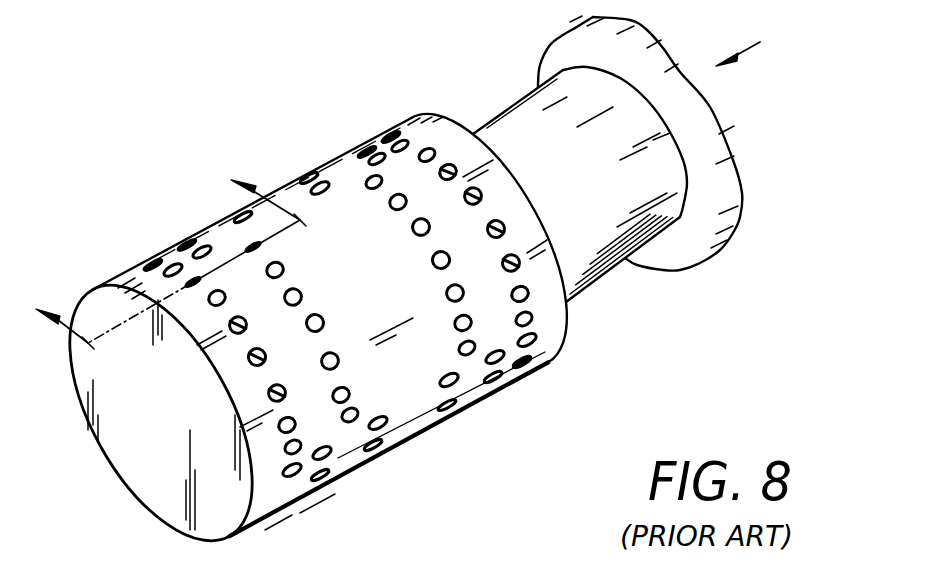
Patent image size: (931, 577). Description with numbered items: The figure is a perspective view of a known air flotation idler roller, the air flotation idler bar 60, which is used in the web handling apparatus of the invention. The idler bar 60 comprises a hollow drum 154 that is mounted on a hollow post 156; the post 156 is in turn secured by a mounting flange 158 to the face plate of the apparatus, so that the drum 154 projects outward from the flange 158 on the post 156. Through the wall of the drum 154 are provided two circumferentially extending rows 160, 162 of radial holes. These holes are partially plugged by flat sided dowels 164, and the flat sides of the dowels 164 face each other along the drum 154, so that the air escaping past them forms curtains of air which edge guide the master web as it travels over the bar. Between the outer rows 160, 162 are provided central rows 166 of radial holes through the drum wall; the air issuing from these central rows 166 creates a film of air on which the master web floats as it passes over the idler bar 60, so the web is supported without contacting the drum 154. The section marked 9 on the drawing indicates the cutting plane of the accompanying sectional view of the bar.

The air flotation idler bar 60 is at (419, 293).
The hollow drum 154 is at (408, 424).
The hollow post 156 is at (600, 253).
The mounting flange 158 is at (717, 134).
The circumferentially extending row of radial holes 160 is at (223, 377).
The circumferentially extending row of radial holes 162 is at (466, 200).
The flat sided dowel 164 is at (481, 193).
The central row of radial holes 166 is at (413, 229).
The section line 9- 9 is at (171, 243).